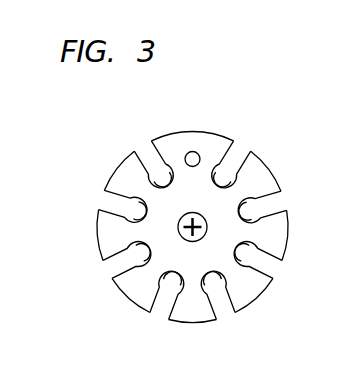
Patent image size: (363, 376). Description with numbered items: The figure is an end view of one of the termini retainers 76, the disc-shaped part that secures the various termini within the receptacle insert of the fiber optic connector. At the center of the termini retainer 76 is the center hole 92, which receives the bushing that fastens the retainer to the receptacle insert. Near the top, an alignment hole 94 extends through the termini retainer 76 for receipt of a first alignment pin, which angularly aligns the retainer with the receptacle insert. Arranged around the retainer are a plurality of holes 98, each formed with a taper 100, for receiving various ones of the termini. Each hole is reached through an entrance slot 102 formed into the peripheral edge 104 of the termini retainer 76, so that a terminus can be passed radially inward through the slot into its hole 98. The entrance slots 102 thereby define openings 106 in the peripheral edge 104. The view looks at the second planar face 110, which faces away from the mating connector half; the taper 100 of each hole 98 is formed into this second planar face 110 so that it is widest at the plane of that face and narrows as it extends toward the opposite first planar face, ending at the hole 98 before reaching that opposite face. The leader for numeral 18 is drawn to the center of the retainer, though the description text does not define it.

The termini retainer 76 is at (80, 194).
The center reference marker 18 is at (179, 221).
The center hole 92 is at (203, 217).
The alignment hole 94 is at (198, 154).
The holes 98 is at (160, 184).
The tapers 100 is at (167, 169).
The entrance slot 102 is at (150, 175).
The peripheral edge 104 is at (268, 163).
The openings 106 is at (279, 267).
The second planar face 110 is at (98, 247).